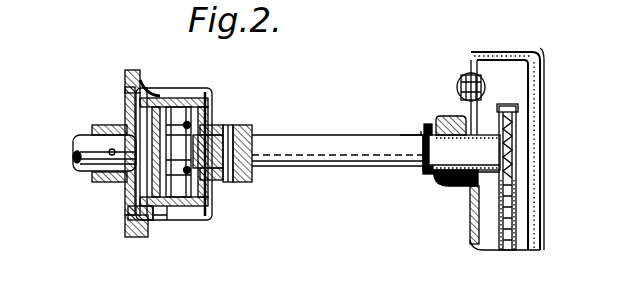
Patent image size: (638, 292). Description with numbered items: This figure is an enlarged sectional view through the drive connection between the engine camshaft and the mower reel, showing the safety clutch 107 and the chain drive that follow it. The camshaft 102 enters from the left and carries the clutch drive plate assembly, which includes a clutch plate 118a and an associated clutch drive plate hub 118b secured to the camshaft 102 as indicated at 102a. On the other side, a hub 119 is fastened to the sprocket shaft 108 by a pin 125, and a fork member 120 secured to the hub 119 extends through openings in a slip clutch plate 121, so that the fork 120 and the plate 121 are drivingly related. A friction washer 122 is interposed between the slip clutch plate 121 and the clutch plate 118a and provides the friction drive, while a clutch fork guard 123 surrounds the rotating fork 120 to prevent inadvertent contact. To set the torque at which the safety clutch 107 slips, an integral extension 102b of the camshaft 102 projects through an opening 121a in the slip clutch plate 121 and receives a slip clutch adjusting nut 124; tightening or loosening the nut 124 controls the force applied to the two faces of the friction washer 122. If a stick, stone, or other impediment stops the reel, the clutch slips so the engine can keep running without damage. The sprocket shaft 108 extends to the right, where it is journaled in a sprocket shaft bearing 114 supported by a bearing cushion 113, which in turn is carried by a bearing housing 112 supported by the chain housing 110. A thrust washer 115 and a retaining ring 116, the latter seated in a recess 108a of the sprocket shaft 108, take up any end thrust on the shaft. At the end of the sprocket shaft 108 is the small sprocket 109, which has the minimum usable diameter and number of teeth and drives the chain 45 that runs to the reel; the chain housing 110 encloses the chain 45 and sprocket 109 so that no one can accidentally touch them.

The chain 45 is at (514, 234).
The camshaft 102 is at (72, 163).
The securement of clutch drive plate hub to camshaft 102a is at (74, 152).
The integral extension 102b is at (89, 173).
The safety clutch 107 is at (165, 224).
The sprocket shaft 108 is at (346, 164).
The recess 108a is at (422, 134).
The sprocket 109 is at (517, 150).
The chain housing 110 is at (511, 51).
The bearing housing 112 is at (468, 105).
The bearing cushion 113 is at (447, 183).
The sprocket shaft bearing 114 is at (438, 167).
The thrust washer 115 is at (429, 124).
The retaining ring 116 is at (422, 172).
The clutch plate 118a is at (126, 227).
The clutch drive plate hub 118b is at (111, 183).
The hub 119 is at (237, 183).
The fork member 120 is at (184, 97).
The slip clutch plate 121 is at (143, 79).
The opening 121a is at (122, 125).
The friction washer 122 is at (137, 232).
The clutch fork guard 123 is at (207, 93).
The slip clutch adjusting nut 124 is at (183, 207).
The pin 125 is at (232, 124).